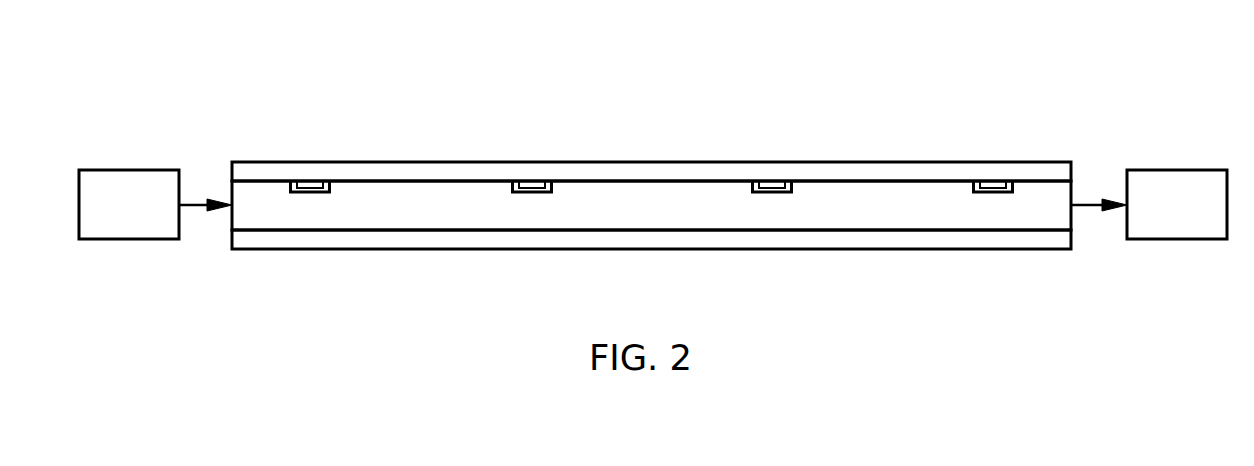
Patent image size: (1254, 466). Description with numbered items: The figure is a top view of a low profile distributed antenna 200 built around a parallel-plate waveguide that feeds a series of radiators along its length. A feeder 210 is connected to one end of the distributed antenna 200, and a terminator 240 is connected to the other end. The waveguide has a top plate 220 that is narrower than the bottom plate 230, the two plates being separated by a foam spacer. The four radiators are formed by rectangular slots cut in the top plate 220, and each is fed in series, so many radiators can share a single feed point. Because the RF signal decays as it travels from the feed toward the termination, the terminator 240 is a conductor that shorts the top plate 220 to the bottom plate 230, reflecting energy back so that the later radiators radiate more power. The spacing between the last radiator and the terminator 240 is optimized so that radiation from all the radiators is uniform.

The distributed antenna 200 is at (1068, 89).
The feeder 210 is at (155, 204).
The top plate 220 is at (389, 215).
The bottom plate 230 is at (456, 250).
The terminator 240 is at (1149, 204).